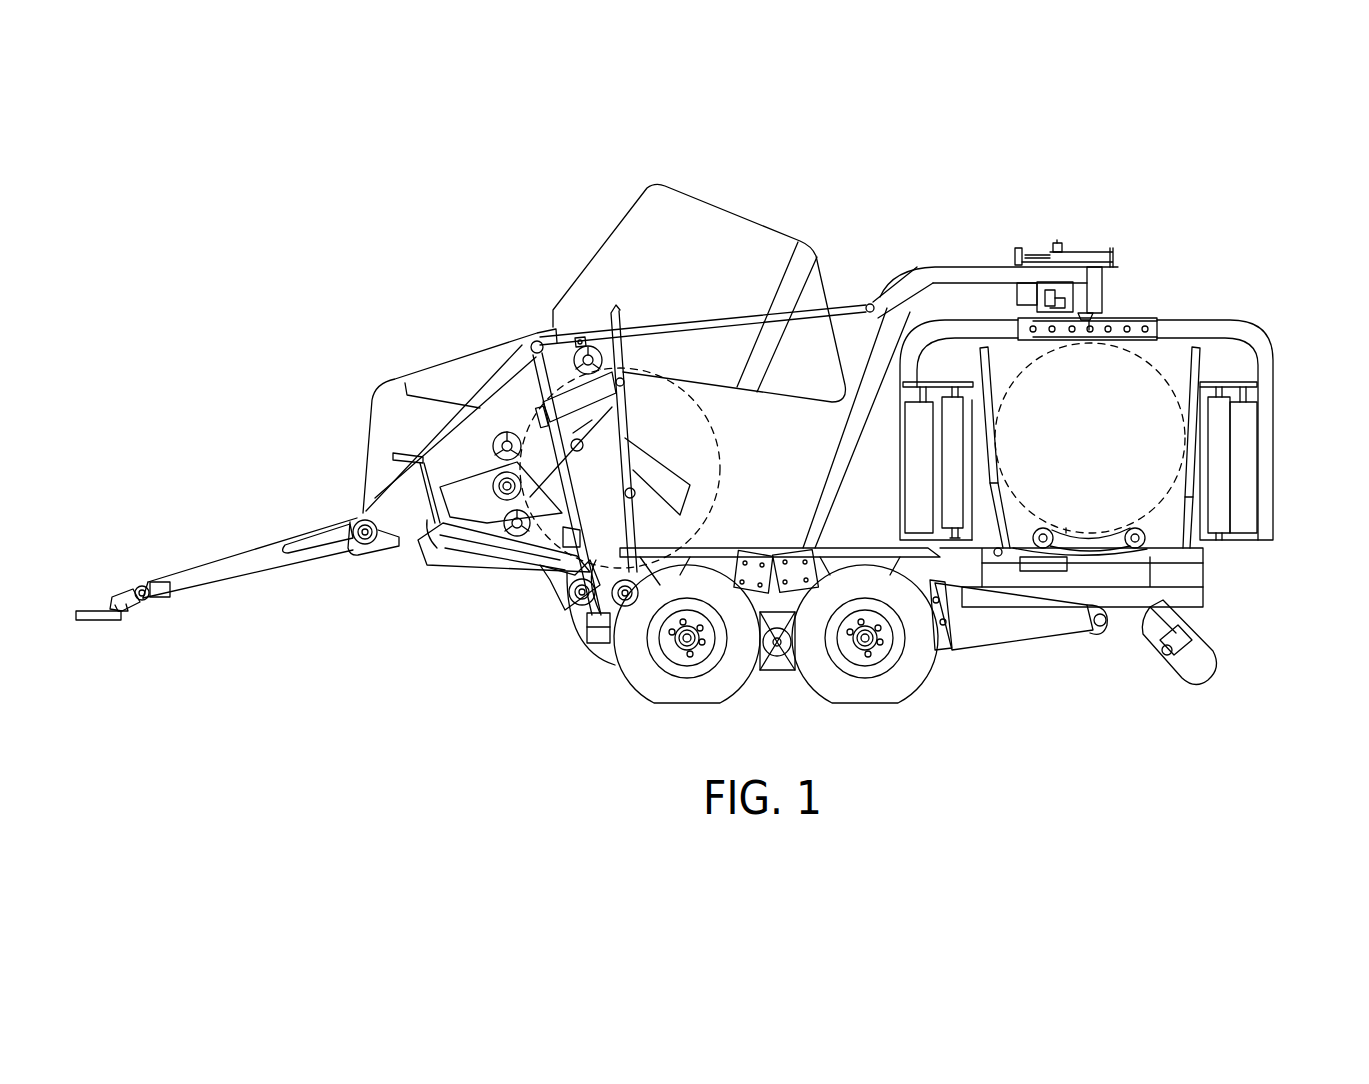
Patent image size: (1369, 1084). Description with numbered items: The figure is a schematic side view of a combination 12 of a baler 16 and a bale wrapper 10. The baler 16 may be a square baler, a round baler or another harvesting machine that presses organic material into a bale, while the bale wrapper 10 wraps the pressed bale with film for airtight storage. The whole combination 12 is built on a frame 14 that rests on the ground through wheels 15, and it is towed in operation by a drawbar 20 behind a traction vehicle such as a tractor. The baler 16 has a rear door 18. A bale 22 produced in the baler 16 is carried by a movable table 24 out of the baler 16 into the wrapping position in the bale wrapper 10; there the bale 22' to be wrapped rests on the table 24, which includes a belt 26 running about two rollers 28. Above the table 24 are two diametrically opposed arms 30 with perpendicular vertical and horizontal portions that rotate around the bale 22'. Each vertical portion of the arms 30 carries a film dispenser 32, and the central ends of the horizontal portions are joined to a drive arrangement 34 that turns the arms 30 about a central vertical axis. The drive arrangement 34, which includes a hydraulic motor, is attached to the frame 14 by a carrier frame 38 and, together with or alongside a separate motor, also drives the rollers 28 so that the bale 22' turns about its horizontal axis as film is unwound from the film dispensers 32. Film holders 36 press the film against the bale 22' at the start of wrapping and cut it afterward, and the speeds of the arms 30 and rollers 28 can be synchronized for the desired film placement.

The bale wrapper 10 is at (1157, 188).
The combination 12 is at (394, 313).
The frame 14 is at (762, 600).
The wheels 15 is at (642, 685).
The baler 16 is at (548, 633).
The rear door 18 is at (673, 205).
The drawbar 20 is at (222, 568).
The bale 22 is at (649, 468).
The bale to be wrapped 22' is at (1107, 408).
The movable table 24 is at (1065, 533).
The belt 26 is at (1083, 535).
The rollers 28 is at (1042, 527).
The arms 30 is at (905, 351).
The film dispenser 32 is at (886, 488).
The drive arrangement 34 is at (1100, 294).
The film holders 36 is at (988, 378).
The carrier frame 38 is at (966, 268).